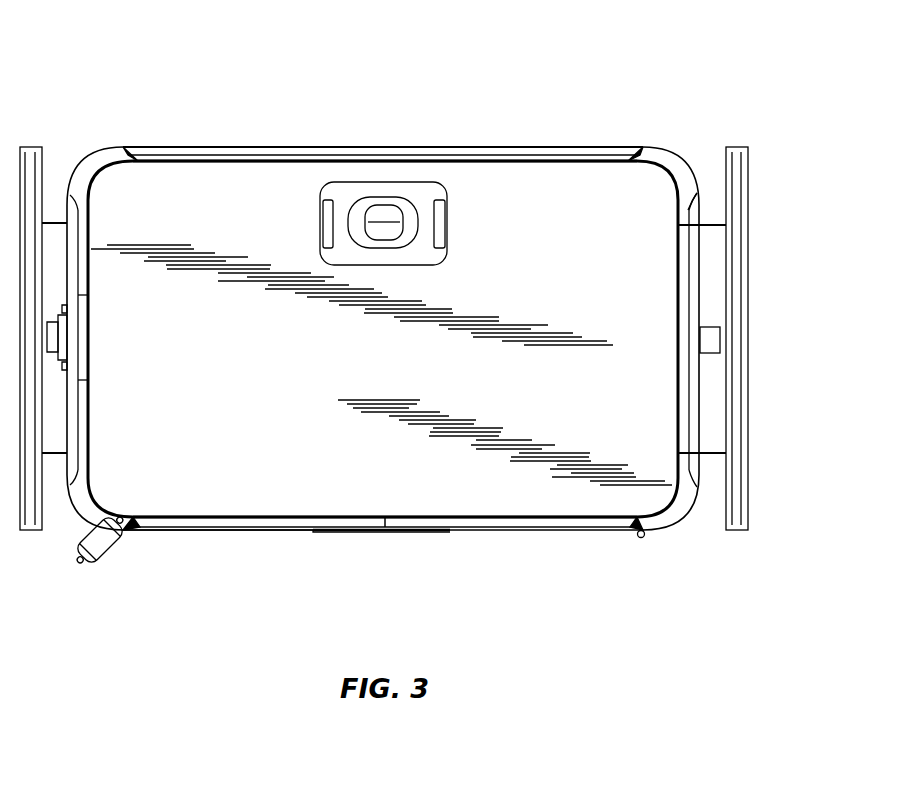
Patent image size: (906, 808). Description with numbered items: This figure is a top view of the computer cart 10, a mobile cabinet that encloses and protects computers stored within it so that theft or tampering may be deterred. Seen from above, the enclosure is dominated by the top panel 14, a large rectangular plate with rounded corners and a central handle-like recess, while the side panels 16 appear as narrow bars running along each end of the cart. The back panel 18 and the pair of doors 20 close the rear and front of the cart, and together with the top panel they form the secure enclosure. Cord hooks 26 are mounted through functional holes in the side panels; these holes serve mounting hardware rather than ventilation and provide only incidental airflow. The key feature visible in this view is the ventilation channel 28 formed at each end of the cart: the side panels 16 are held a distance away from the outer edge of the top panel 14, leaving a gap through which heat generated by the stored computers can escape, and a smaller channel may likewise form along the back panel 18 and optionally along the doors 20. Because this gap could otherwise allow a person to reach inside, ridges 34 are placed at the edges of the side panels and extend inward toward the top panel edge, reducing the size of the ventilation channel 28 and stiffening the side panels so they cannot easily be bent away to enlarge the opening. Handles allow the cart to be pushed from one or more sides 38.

The computer cart 10 is at (478, 107).
The top panel 14 is at (595, 492).
The side panels 16 is at (700, 493).
The back panel 18 is at (283, 147).
The doors 20 is at (235, 530).
The cord hooks 26 is at (711, 338).
The ventilation channel 28 is at (688, 186).
The ridges 34 is at (690, 395).
The sides 38 is at (735, 265).